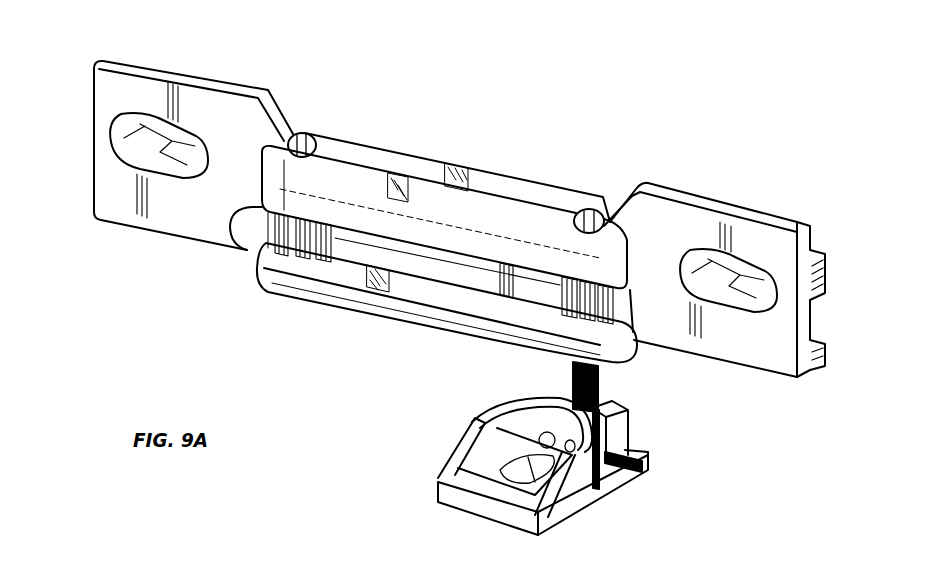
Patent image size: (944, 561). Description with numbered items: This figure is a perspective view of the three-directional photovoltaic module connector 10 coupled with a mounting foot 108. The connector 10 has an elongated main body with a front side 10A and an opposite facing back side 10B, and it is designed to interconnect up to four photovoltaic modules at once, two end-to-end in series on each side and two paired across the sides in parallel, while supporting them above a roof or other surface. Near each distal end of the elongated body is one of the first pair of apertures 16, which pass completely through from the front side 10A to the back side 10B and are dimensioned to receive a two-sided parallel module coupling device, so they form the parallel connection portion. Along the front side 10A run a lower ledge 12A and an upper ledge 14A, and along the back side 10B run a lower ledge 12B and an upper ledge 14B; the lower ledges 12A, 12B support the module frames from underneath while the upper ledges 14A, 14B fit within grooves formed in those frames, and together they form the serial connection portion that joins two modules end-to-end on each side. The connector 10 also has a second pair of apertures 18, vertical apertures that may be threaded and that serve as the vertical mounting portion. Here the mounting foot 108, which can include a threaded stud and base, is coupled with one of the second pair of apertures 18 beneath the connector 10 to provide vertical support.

The three-directional photovoltaic module connector 10 is at (516, 78).
The front side 10A is at (762, 360).
The back side 10B is at (781, 211).
The lower ledge 12A is at (313, 275).
The lower ledge 12B is at (830, 358).
The upper ledge 14A is at (237, 247).
The upper ledge 14B is at (830, 290).
The first pair of apertures 16 is at (120, 132).
The second pair of apertures 18 is at (302, 133).
The mounting foot 108 is at (650, 487).